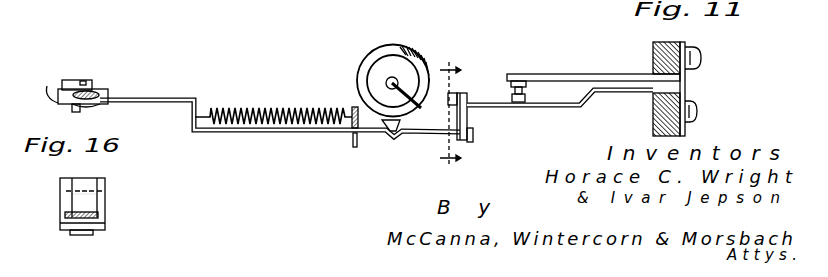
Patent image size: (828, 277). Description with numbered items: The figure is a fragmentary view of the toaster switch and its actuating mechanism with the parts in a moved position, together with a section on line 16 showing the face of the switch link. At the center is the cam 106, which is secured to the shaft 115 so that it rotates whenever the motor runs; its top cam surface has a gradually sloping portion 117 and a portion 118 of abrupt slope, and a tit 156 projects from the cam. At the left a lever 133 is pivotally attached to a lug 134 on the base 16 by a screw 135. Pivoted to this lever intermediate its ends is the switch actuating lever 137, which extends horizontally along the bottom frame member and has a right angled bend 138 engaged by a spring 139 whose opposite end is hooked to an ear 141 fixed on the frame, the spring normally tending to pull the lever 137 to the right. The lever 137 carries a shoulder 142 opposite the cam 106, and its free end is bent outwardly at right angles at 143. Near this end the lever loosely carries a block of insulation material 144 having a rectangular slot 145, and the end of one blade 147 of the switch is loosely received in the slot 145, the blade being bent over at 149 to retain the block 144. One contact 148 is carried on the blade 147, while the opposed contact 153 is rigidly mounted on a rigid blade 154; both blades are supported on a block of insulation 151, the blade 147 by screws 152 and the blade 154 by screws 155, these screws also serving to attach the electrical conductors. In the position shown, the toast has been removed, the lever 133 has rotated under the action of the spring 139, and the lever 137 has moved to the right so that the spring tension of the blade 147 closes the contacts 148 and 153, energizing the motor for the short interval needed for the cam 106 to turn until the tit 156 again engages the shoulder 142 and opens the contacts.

In FIG. 11, the base 16 is at (455, 116).
In FIG. 11, the cam 106 is at (382, 41).
In FIG. 11, the shaft 115 is at (418, 104).
In FIG. 11, the gradually sloping portion 117 is at (360, 69).
In FIG. 11, the abruptly sloping portion 118 is at (432, 60).
In FIG. 11, the lever 133 is at (101, 92).
In FIG. 11, the lug 134 is at (40, 86).
In FIG. 11, the screw 135 is at (90, 80).
In FIG. 11, the switch actuating lever 137 is at (272, 136).
In FIG. 16, the switch actuating lever 137 is at (99, 216).
In FIG. 11, the right angled bend 138 is at (191, 130).
In FIG. 11, the spring 139 is at (270, 111).
In FIG. 11, the ear 141 is at (355, 148).
In FIG. 11, the shoulder 142 is at (397, 138).
In FIG. 11, the bent end 143 is at (474, 140).
In FIG. 16, the bent end 143 is at (80, 238).
In FIG. 11, the block of insulation material 144 is at (468, 117).
In FIG. 16, the block of insulation material 144 is at (62, 203).
In FIG. 16, the rectangular slot 145 is at (96, 209).
In FIG. 11, the blade 147 is at (577, 108).
In FIG. 11, the contact 148 is at (523, 103).
In FIG. 11, the bent-over end 149 is at (452, 93).
In FIG. 16, the bent-over end 149 is at (89, 183).
In FIG. 11, the block of insulation 151 is at (654, 115).
In FIG. 11, the screws 152 is at (697, 110).
In FIG. 11, the opposed contact 153 is at (518, 79).
In FIG. 11, the rigid blade 154 is at (571, 74).
In FIG. 11, the screws 155 is at (701, 57).
In FIG. 11, the tit 156 is at (387, 133).